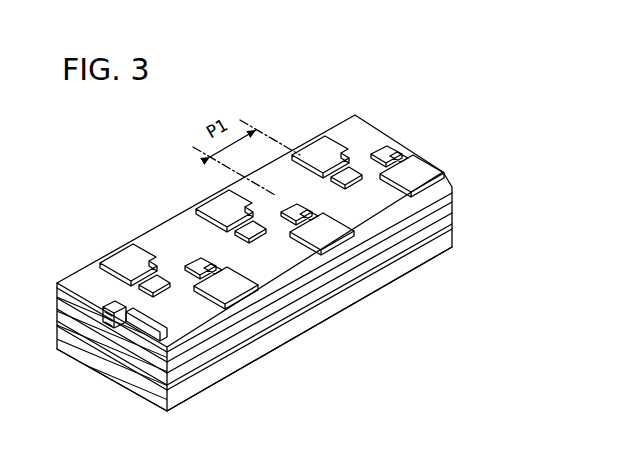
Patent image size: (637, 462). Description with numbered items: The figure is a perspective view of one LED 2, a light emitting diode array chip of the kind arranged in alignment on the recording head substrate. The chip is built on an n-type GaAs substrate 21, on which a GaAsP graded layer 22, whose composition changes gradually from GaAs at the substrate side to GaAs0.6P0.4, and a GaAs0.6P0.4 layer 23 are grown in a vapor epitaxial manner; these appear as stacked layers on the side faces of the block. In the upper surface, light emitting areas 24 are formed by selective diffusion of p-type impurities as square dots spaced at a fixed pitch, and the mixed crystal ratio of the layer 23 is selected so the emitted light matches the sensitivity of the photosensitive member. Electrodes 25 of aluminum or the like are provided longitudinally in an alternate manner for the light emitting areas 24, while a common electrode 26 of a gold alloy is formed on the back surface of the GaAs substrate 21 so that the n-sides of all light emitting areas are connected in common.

The LED 2 is at (381, 126).
The n-type GaAs substrate 21 is at (452, 240).
The GaAsP graded layer 22 is at (450, 214).
The GaAs0.6P0.4 layer 23 is at (447, 190).
The light emitting area 24 is at (110, 308).
The electrode 25 is at (125, 258).
The common electrode 26 is at (455, 247).